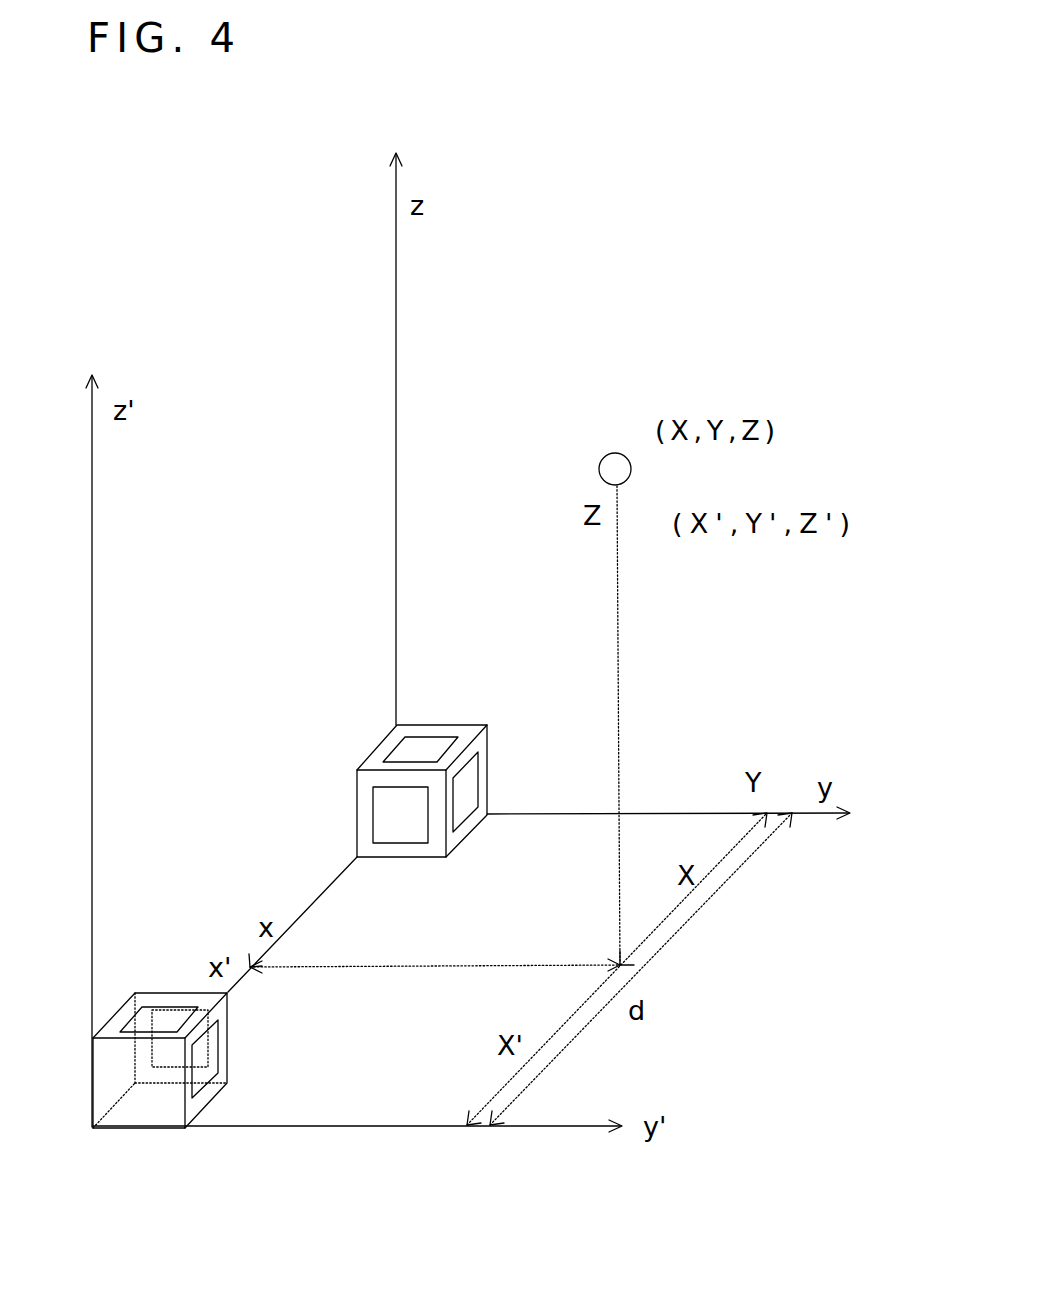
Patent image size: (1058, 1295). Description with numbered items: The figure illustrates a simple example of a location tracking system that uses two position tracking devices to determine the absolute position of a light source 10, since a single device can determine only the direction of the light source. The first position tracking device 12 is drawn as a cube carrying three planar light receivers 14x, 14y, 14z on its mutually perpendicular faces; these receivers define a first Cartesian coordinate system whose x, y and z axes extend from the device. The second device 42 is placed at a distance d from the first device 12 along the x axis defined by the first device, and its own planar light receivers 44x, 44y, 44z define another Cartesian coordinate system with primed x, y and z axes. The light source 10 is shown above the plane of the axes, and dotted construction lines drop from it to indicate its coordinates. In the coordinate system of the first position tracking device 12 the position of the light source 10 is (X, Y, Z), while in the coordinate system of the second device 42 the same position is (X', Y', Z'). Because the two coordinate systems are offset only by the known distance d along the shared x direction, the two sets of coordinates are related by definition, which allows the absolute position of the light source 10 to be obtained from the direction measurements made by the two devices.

The light source 10 is at (607, 453).
The first position tracking device 12 is at (382, 750).
The planar light receiver 14x is at (392, 811).
The planar light receiver 14y is at (473, 782).
The planar light receiver 14z is at (438, 735).
The second device 42 is at (147, 1115).
The planar light receiver 44x is at (148, 1058).
The planar light receiver 44y is at (213, 1053).
The planar light receiver 44z is at (178, 1000).